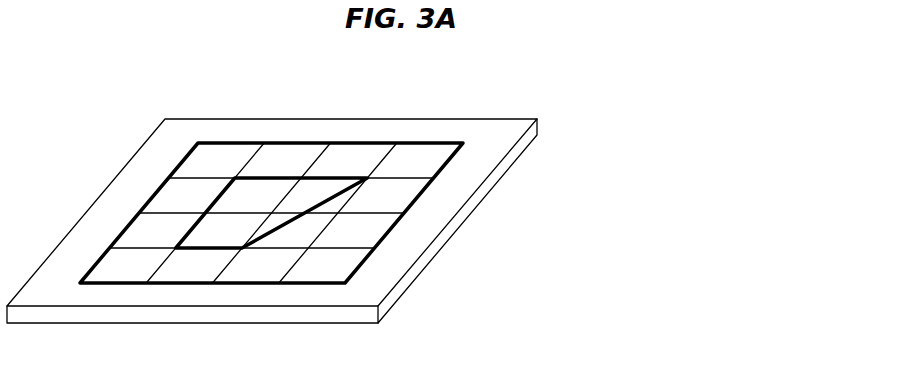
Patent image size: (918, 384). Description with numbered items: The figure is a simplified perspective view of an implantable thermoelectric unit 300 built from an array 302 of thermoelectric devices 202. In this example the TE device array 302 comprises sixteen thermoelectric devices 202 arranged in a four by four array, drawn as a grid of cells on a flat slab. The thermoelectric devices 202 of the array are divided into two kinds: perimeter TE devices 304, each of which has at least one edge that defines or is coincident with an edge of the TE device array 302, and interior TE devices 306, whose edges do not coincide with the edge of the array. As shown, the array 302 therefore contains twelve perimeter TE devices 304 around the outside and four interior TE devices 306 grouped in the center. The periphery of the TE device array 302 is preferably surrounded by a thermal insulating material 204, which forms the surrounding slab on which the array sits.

The implantable thermoelectric unit 300 is at (568, 166).
The TE device array 302 is at (198, 143).
The perimeter TE devices 304 is at (449, 160).
The interior TE device 306 is at (340, 213).
The thermoelectric device 202 is at (132, 265).
The thermal insulating material 204 is at (385, 307).